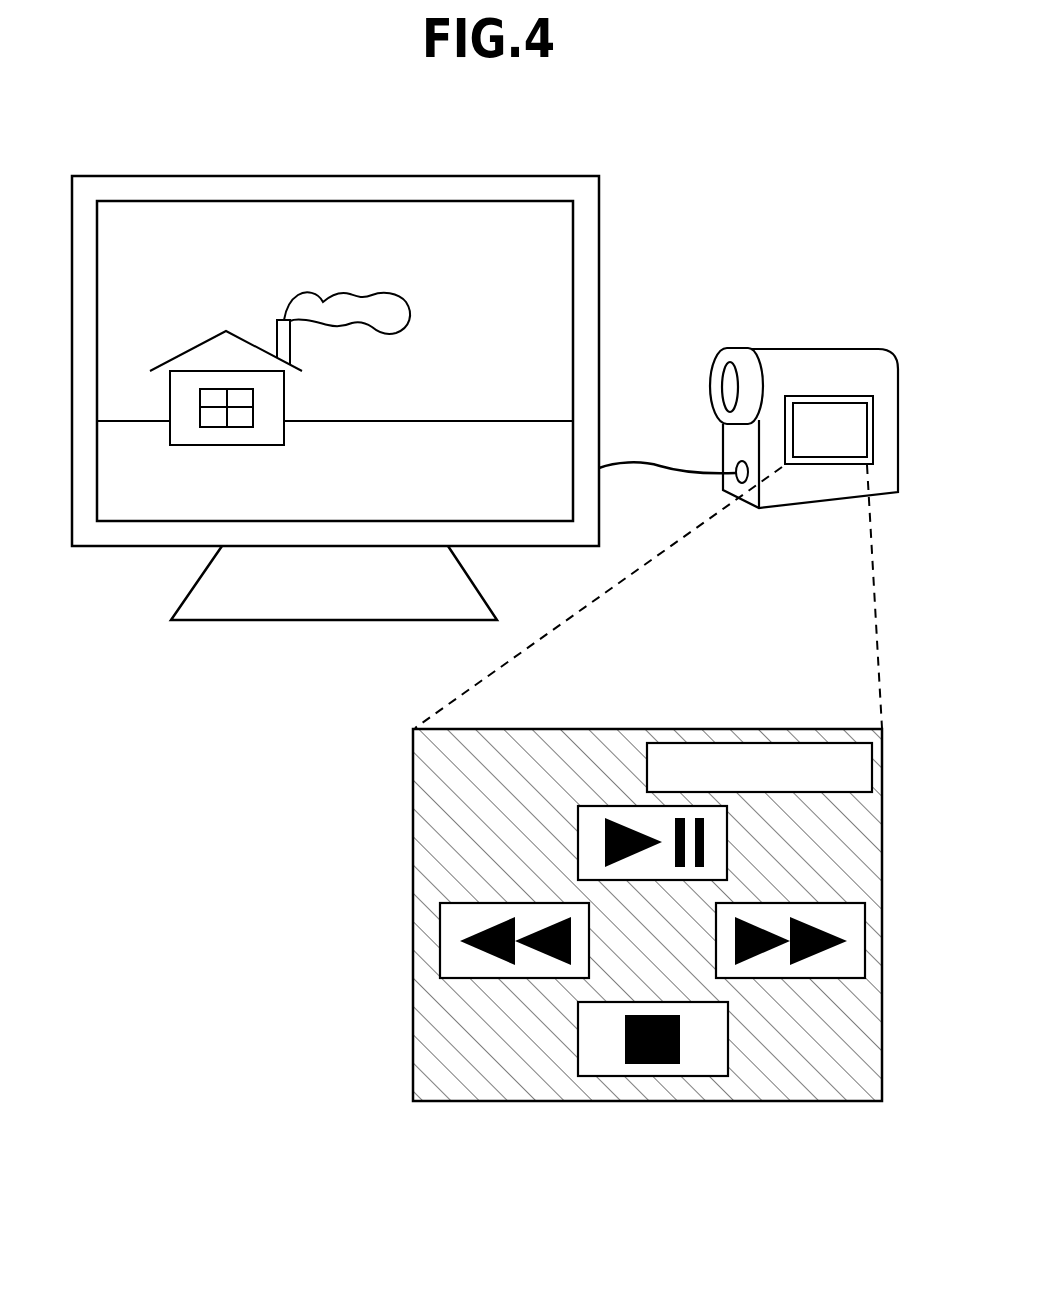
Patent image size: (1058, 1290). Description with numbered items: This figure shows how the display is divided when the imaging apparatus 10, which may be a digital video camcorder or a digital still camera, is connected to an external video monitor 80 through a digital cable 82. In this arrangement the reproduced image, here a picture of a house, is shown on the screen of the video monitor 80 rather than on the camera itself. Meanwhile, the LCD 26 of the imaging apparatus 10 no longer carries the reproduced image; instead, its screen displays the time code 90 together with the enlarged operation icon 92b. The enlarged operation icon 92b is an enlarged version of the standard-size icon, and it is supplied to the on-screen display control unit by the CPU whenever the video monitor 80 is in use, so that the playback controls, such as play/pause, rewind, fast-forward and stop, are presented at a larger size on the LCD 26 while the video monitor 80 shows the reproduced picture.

The video monitor 80 is at (270, 176).
The digital cable 82 is at (650, 462).
The imaging apparatus 10 is at (837, 360).
The LCD 26 is at (828, 444).
The time code 90 is at (762, 741).
The enlarged operation icon 92b is at (621, 812).